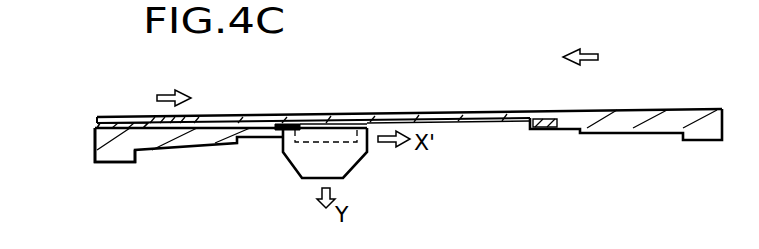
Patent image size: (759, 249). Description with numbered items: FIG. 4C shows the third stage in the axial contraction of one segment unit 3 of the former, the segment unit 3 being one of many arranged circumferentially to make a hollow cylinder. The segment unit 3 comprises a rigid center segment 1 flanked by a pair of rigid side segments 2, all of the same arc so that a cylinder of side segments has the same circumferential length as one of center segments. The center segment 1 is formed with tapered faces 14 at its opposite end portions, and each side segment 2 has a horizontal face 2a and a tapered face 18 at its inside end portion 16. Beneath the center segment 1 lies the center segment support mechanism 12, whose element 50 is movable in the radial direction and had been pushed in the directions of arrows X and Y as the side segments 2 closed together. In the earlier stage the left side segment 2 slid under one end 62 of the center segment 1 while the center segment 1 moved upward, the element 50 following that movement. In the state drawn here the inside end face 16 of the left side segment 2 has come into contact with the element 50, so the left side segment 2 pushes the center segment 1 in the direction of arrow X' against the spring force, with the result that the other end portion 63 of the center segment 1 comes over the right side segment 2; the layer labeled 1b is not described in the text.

The center segment 1 is at (461, 112).
The lower layer of carrier 1b is at (476, 128).
The side segment 2 is at (213, 116).
The horizontal face 2a is at (170, 116).
The segment unit 3 is at (387, 103).
The center segment support mechanism 12 is at (273, 163).
The tapered face 14 is at (105, 120).
The inside end portion 16 is at (327, 118).
The tapered face 18 is at (273, 118).
The element 50 is at (357, 152).
The one end 62 is at (124, 115).
The other end portion 63 is at (532, 112).